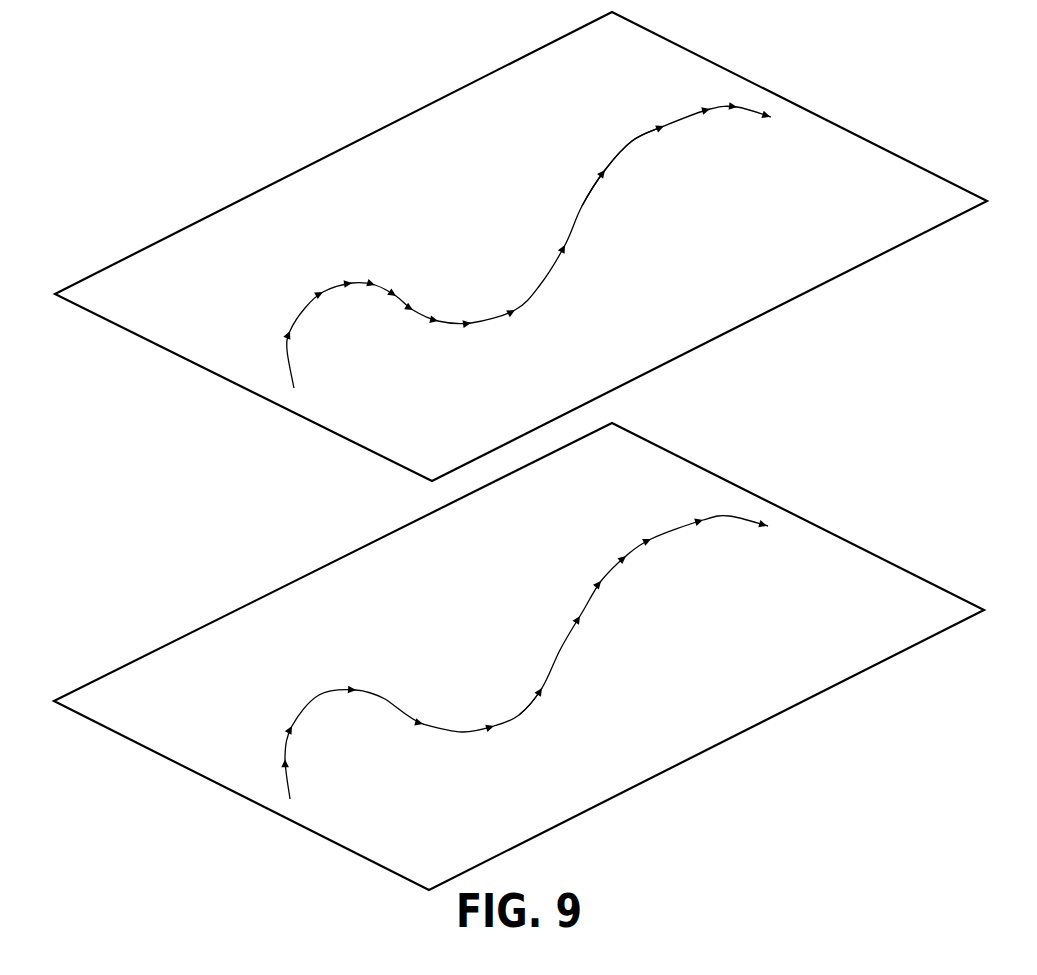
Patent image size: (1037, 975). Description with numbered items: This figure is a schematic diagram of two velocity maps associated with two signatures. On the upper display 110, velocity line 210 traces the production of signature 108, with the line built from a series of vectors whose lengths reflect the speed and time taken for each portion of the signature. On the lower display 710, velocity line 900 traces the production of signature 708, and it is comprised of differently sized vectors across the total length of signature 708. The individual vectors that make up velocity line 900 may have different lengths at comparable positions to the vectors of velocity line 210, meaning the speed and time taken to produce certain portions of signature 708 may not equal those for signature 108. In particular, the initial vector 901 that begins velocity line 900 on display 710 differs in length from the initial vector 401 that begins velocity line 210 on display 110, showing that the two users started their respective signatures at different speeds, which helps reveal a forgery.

The display 110 is at (390, 154).
The signature 108 is at (632, 141).
The velocity line 210 is at (582, 206).
The initial vector 401 is at (288, 354).
The display 710 is at (308, 599).
The velocity line 900 is at (594, 595).
The initial vector 901 is at (287, 776).
The signature 708 is at (529, 711).